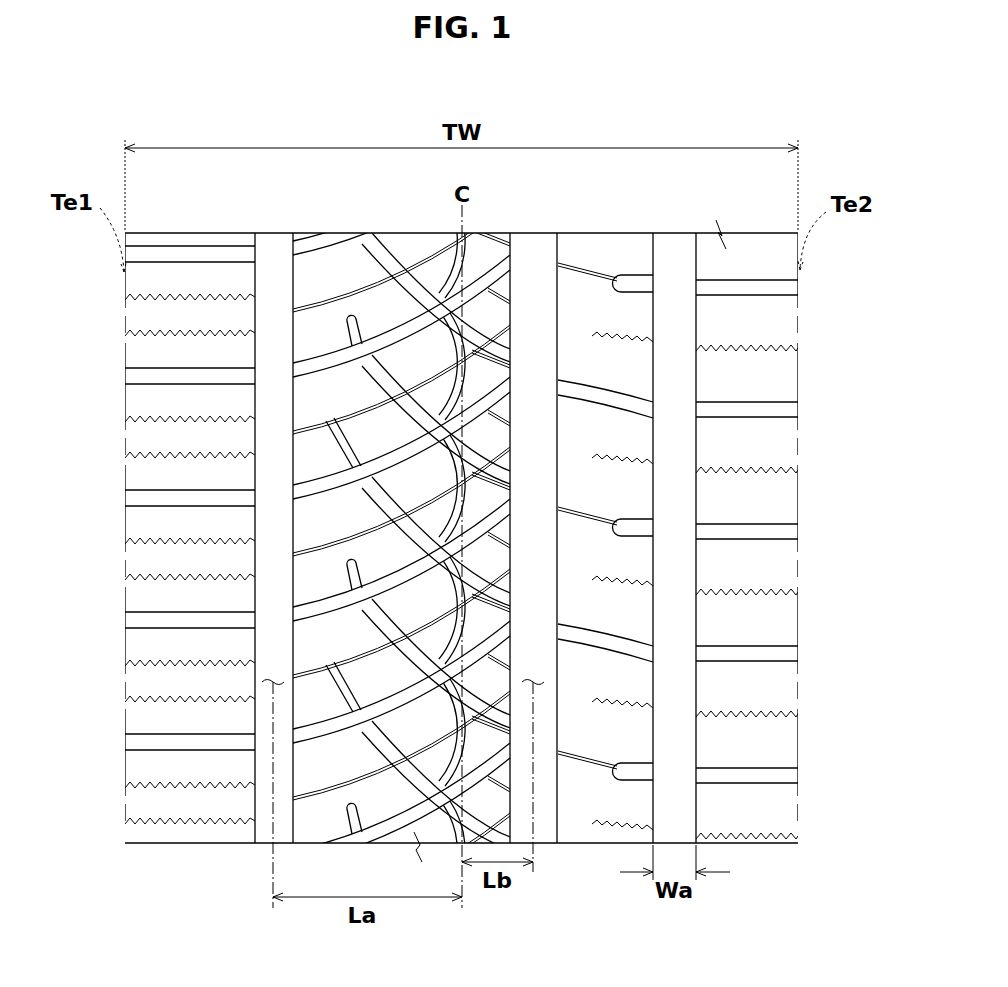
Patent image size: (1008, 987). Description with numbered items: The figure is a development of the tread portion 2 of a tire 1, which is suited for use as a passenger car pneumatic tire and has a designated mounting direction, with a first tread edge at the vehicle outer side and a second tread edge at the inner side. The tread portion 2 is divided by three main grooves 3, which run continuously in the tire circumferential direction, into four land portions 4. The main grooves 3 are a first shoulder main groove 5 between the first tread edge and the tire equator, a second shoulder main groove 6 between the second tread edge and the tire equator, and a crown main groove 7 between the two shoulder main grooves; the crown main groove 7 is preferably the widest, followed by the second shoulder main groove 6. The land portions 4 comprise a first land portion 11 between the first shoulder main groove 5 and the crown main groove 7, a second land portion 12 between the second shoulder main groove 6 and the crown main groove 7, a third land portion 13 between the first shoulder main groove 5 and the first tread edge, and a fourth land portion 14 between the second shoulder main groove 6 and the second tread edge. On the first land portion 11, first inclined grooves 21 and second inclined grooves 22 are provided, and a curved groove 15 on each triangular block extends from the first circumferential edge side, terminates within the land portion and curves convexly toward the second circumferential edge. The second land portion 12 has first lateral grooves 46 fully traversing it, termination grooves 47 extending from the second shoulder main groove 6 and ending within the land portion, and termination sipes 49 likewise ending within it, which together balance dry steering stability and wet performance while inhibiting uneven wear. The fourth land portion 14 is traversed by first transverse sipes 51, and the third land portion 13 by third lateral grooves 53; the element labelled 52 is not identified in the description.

The tire 1 is at (650, 223).
The tread portion 2 is at (362, 220).
The main grooves 3 is at (267, 355).
The land portions 4 is at (162, 274).
The first shoulder main groove 5 is at (275, 275).
The second shoulder main groove 6 is at (676, 275).
The crown main groove 7 is at (536, 275).
The first land portion 11 is at (423, 243).
The second land portion 12 is at (602, 256).
The third land portion 13 is at (209, 274).
The fourth land portion 14 is at (749, 275).
The curved groove 15 is at (391, 565).
The first inclined grooves 21 is at (393, 448).
The second inclined grooves 22 is at (379, 495).
The first lateral grooves 46 is at (613, 399).
The termination grooves 47 is at (645, 525).
The termination sipes 49 is at (629, 706).
The first transverse sipes 51 is at (744, 460).
The shoulder sipe 52 is at (159, 663).
The third lateral grooves 53 is at (187, 616).